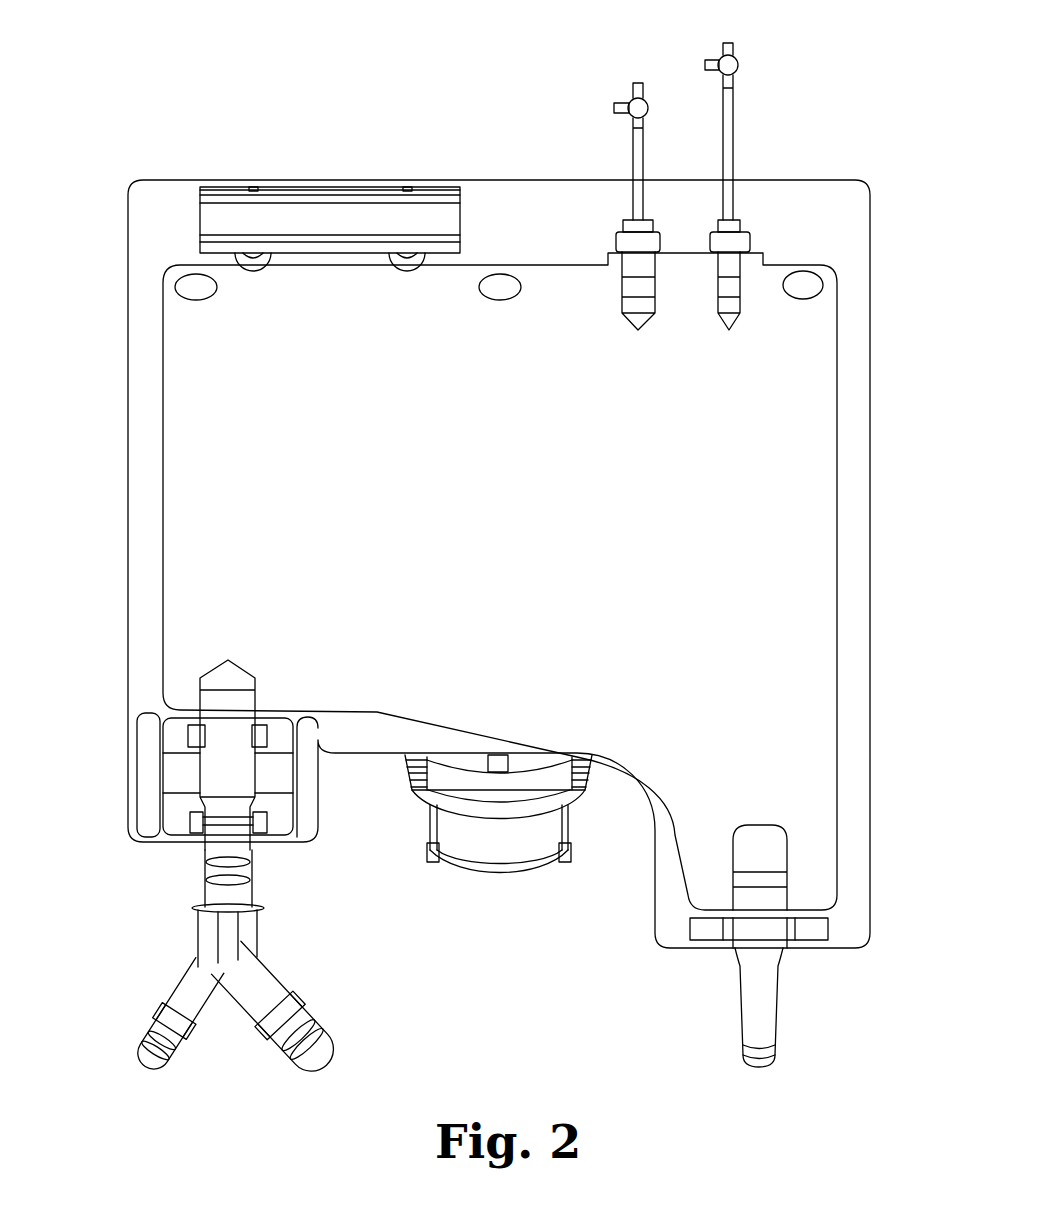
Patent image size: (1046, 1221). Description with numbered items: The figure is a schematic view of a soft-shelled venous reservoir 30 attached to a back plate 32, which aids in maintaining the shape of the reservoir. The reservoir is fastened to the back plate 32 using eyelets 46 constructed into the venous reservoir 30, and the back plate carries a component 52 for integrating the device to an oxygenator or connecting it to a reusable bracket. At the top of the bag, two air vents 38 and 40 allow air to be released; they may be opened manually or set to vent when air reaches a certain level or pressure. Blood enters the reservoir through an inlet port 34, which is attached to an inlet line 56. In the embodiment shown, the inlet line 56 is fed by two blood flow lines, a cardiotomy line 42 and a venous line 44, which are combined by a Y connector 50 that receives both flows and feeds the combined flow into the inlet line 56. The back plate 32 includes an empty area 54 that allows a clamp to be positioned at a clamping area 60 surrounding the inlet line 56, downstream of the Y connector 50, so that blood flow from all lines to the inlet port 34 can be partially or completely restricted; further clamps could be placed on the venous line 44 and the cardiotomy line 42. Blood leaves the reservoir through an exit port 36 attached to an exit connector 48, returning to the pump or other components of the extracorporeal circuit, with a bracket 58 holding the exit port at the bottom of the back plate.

The venous reservoir 30 is at (802, 530).
The back plate 32 is at (118, 240).
The inlet port 34 is at (190, 692).
The exit port 36 is at (797, 890).
The air vent 38 is at (637, 200).
The air vent 40 is at (728, 200).
The cardiotomy line 42 is at (136, 1032).
The venous line 44 is at (322, 1007).
The eyelets 46 is at (830, 285).
The exit connector 48 is at (793, 1007).
The Y connector 50 is at (230, 996).
The component 52 is at (516, 882).
The empty area 54 is at (138, 805).
The inlet line 56 is at (265, 828).
The bracket 58 is at (805, 928).
The clamping area 60 is at (190, 768).